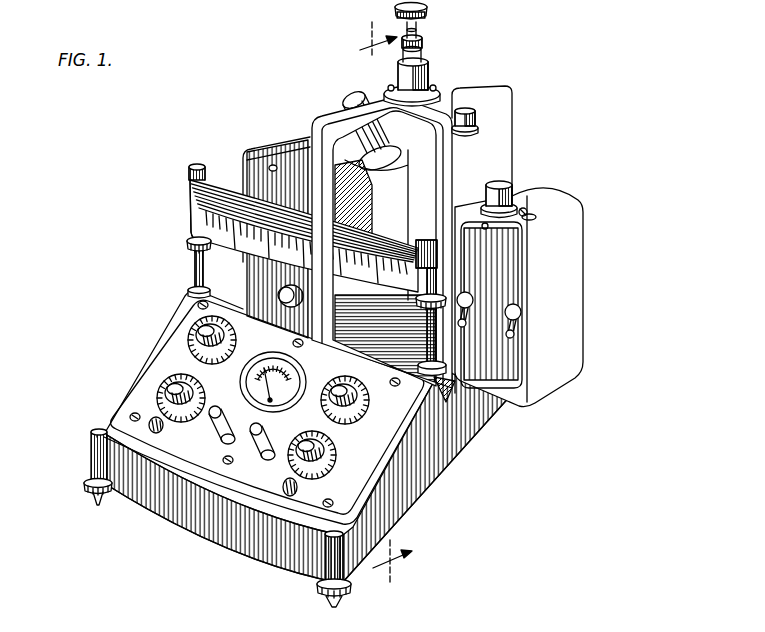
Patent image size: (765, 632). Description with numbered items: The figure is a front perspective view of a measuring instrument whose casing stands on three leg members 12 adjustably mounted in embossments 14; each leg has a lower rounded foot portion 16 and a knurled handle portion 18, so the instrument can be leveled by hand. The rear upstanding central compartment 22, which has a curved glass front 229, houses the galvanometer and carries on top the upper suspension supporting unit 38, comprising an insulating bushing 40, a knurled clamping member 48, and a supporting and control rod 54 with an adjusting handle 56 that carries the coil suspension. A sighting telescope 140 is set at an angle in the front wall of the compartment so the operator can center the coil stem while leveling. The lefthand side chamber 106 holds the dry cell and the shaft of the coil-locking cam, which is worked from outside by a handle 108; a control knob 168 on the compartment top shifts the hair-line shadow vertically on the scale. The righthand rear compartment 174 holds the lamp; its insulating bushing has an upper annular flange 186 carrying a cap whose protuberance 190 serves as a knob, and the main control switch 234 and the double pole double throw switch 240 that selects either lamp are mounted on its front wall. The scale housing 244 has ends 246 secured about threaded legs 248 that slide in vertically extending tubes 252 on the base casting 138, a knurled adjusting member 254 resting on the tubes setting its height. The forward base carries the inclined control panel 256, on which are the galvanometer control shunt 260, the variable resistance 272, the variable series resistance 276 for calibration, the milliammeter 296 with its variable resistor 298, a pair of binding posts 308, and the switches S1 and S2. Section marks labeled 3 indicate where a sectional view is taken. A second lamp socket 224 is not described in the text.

The leg member 12 is at (86, 507).
The embossment 14 is at (92, 462).
The foot portion 16 is at (100, 500).
The knurled handle portion 18 is at (86, 488).
The central compartment 22 is at (480, 138).
The upper suspension supporting unit 38 is at (432, 66).
The insulating bushing 40 is at (400, 72).
The knurled clamping member 48 is at (424, 43).
The supporting and control rod 54 is at (420, 30).
The adjusting handle 56 is at (398, 13).
The side chamber 106 is at (272, 136).
The handle 108 is at (280, 293).
The base casting 138 is at (440, 478).
The sighting telescope 140 is at (348, 118).
The control knob 168 is at (468, 108).
The righthand rear compartment 174 is at (565, 340).
The upper annular flange 186 is at (528, 210).
The protuberance 190 is at (498, 178).
The washer 224 is at (535, 217).
The curved glass front 229 is at (398, 213).
The main control switch 234 is at (520, 312).
The double pole double throw switch 240 is at (472, 298).
The scale housing 244 is at (205, 198).
The ends of scale housing 246 is at (438, 243).
The threaded legs 248 is at (190, 228).
The vertically extending tubes 252 is at (448, 366).
The knurled adjusting member 254 is at (432, 300).
The control panel 256 is at (347, 457).
The galvanometer control shunt 260 is at (368, 410).
The variable resistance 272 is at (330, 476).
The variable series resistance 276 is at (185, 337).
The milliammeter 296 is at (240, 377).
The variable resistor 298 is at (147, 400).
The binding posts 308 is at (148, 426).
The triple pole double throw switch S1 is at (214, 427).
The double pole double throw switch S2 is at (252, 452).
The section line 3- 3 is at (377, 303).